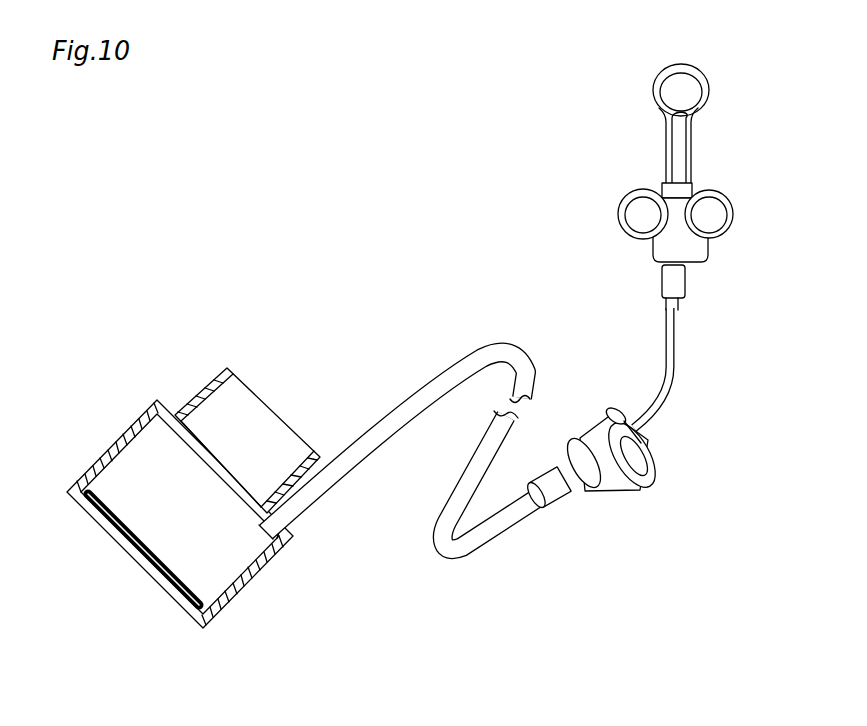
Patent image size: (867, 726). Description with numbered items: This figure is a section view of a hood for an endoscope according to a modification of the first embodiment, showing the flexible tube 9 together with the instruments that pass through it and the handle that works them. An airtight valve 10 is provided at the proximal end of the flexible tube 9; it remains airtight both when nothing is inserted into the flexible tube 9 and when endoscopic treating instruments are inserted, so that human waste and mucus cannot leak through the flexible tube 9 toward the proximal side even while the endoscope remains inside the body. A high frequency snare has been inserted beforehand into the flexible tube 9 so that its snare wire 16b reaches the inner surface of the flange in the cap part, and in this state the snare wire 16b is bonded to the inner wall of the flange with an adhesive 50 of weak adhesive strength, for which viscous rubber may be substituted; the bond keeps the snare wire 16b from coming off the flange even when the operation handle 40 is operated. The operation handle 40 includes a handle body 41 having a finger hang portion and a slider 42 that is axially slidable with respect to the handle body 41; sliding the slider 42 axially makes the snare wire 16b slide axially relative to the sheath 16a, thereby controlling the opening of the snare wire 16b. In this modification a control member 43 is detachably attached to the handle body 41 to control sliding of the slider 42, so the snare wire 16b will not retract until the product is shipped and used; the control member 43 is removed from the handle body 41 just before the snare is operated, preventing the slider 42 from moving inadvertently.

The flexible tube 9 is at (482, 360).
The airtight valve 10 is at (630, 506).
The sheath 16a is at (242, 562).
The snare wire 16b is at (133, 528).
The operation handle 40 is at (671, 246).
The handle body 41 is at (680, 138).
The slider 42 is at (700, 255).
The control member 43 is at (656, 180).
The adhesive 50 is at (193, 503).